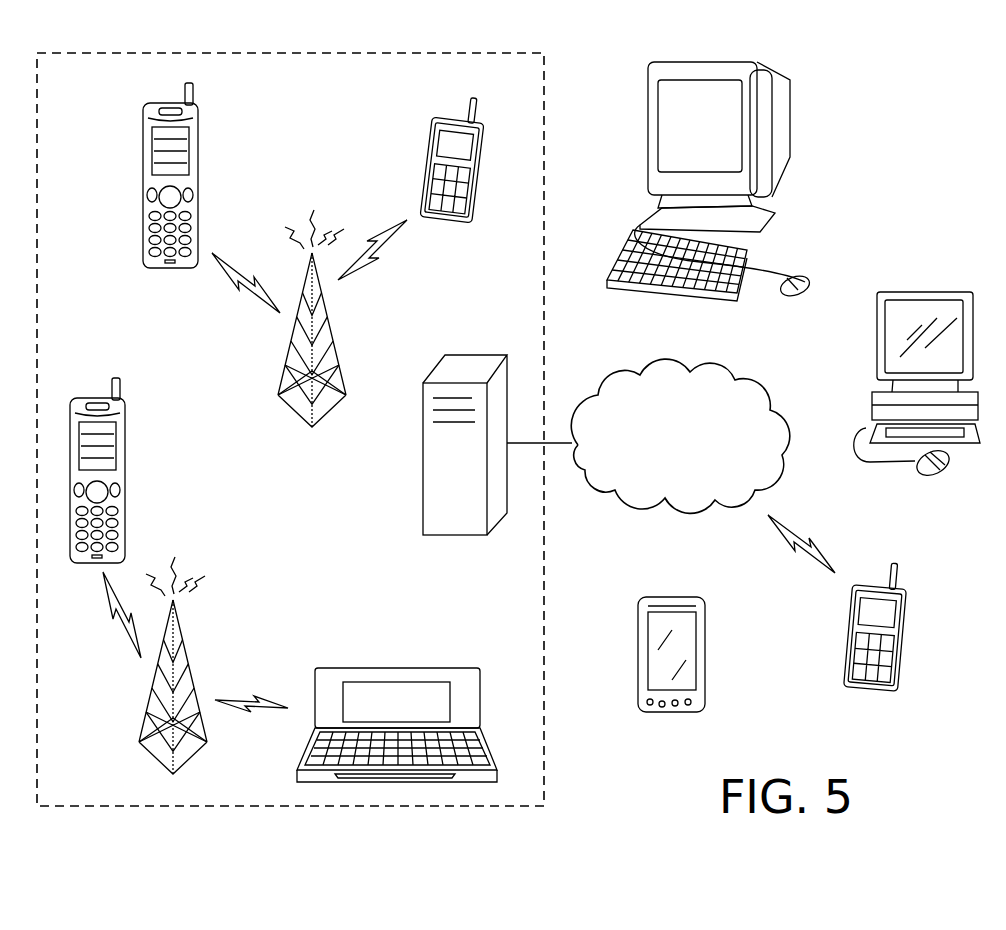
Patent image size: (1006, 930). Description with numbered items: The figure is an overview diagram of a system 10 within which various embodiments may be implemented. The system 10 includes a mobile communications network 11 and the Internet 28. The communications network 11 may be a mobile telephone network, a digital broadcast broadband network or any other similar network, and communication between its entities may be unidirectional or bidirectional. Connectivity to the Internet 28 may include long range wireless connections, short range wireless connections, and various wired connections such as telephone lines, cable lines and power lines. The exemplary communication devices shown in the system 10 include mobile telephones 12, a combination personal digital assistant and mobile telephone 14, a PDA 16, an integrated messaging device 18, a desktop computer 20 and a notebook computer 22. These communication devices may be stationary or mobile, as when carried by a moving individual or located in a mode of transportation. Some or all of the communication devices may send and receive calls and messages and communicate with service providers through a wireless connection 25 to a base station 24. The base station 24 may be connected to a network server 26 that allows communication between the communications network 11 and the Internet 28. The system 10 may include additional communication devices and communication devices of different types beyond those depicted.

The system 10 is at (944, 546).
The mobile communications network 11 is at (54, 92).
The mobile telephone 12 is at (199, 187).
The combination personal digital assistant (PDA) and mobile telephone 14 is at (396, 670).
The PDA 16 is at (706, 652).
The integrated messaging device (IMD) 18 is at (428, 167).
The desktop computer 20 is at (788, 116).
The notebook computer 22 is at (925, 292).
The base station 24 is at (329, 326).
The wireless connection 25 is at (823, 546).
The network server 26 is at (423, 457).
The Internet 28 is at (714, 372).